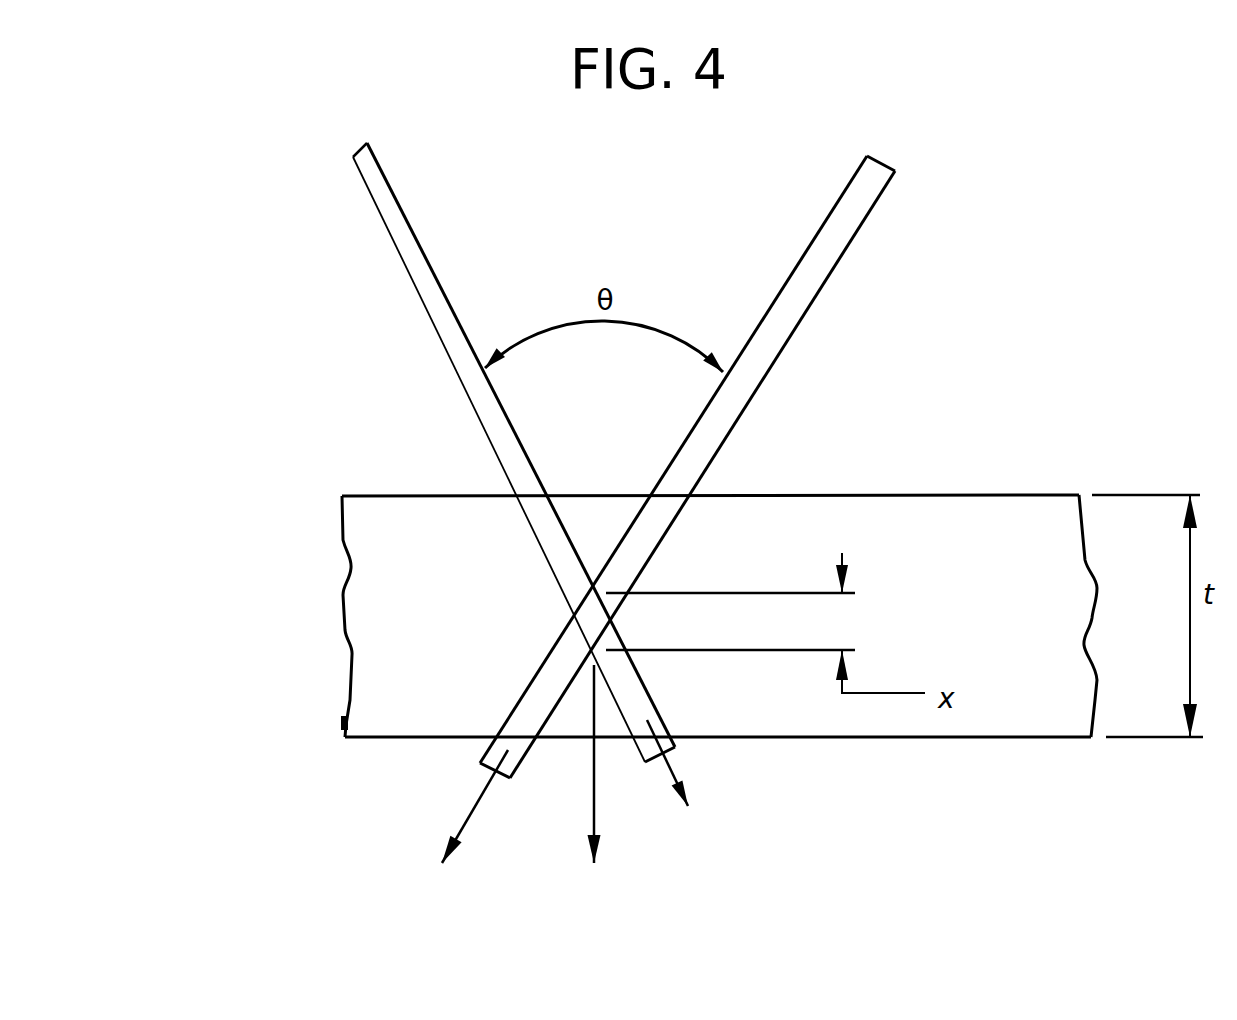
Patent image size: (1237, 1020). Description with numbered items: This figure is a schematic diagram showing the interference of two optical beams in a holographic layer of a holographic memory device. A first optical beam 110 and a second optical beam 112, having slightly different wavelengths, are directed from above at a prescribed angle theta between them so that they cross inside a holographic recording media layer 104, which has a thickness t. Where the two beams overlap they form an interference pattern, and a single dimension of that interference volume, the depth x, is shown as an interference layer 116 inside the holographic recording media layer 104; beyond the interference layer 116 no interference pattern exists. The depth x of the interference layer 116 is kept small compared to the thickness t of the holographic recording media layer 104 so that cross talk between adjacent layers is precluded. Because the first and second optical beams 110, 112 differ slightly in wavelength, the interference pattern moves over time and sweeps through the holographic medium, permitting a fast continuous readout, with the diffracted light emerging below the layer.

The holographic recording media layer 104 is at (397, 595).
The first optical beam 110 is at (463, 370).
The second optical beam 112 is at (820, 284).
The interference layer 116 is at (592, 623).